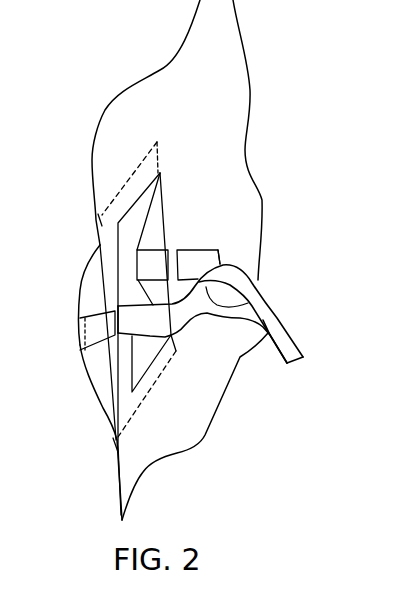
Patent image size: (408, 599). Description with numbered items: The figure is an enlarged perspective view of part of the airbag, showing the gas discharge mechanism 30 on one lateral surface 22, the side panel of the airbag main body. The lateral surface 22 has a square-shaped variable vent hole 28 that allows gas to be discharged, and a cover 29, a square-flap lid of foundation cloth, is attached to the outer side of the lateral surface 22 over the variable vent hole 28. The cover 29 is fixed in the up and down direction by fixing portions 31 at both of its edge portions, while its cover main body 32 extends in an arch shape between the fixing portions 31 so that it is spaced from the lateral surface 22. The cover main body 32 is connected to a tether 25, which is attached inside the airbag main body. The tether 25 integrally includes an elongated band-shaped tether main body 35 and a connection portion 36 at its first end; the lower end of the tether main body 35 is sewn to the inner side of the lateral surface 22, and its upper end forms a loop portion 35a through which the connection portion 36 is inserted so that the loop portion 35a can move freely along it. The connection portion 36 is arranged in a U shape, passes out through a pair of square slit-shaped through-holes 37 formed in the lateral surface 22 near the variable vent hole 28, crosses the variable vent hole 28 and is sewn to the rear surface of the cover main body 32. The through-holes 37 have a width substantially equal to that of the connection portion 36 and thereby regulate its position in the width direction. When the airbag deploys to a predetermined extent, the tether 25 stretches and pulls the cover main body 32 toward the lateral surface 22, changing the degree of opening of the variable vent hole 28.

The lateral surface 22 is at (243, 88).
The tether 25 is at (294, 324).
The variable vent hole 28 is at (163, 198).
The cover 29 is at (92, 387).
The gas discharge mechanism 30 is at (87, 262).
The fixing portion 31 is at (100, 220).
The cover main body 32 is at (83, 293).
The tether main body 35 is at (298, 352).
The loop portion 35a is at (258, 297).
The connection portion 36 is at (218, 250).
The through-hole 37 is at (180, 262).